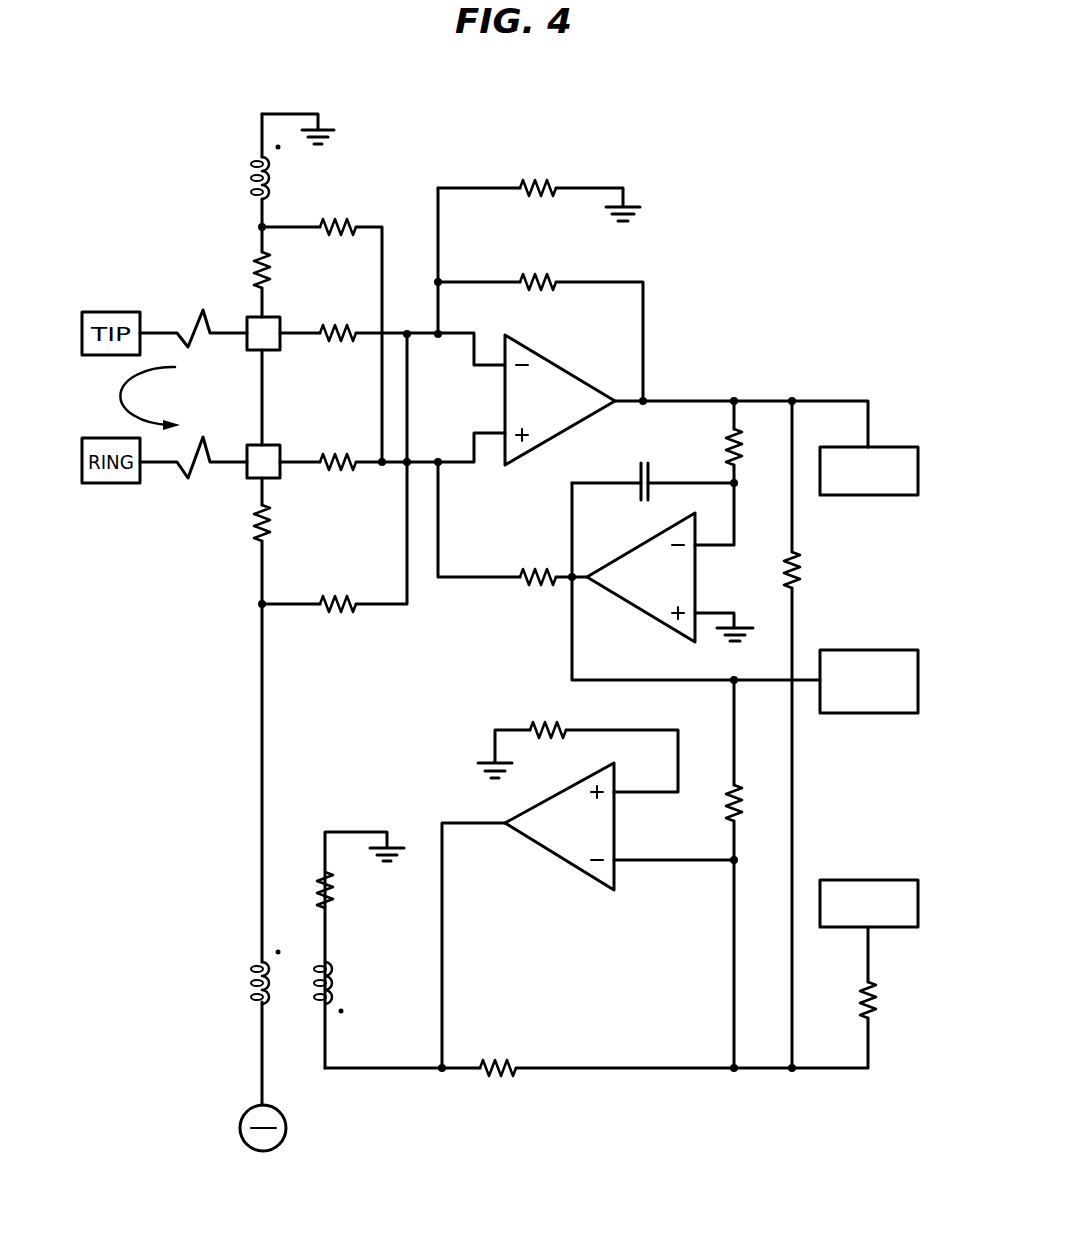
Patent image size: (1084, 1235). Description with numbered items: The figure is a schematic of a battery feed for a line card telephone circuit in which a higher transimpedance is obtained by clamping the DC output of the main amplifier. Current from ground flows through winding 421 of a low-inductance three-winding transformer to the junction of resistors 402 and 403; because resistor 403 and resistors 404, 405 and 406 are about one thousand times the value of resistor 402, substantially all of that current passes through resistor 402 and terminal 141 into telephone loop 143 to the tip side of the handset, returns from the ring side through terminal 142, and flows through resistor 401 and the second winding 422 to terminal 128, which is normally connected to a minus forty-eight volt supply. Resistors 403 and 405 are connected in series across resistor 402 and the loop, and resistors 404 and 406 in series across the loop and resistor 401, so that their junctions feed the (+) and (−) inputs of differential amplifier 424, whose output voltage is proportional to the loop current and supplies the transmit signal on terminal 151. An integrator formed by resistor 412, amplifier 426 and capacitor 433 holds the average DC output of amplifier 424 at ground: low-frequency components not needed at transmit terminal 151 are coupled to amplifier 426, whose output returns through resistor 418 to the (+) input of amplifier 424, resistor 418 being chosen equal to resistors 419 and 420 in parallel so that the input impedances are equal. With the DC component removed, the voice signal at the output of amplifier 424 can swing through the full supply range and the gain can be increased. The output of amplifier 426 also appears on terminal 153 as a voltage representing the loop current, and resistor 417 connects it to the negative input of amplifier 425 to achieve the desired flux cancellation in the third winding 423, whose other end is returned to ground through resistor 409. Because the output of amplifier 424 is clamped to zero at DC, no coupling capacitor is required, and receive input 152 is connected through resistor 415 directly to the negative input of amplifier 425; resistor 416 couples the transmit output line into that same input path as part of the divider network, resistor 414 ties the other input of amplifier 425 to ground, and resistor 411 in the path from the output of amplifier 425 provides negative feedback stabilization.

The terminal 128 is at (240, 1128).
The terminal 141 is at (275, 352).
The terminal 142 is at (268, 445).
The telephone loop 143 is at (125, 393).
The transmit terminal 151 is at (870, 496).
The receive terminal 152 is at (878, 880).
The terminal 153 is at (895, 650).
The resistor 401 is at (270, 525).
The resistor 402 is at (253, 270).
The resistor 403 is at (340, 218).
The resistor 404 is at (332, 326).
The resistor 405 is at (345, 470).
The resistor 406 is at (345, 612).
The resistor 409 is at (335, 890).
The resistor 411 is at (500, 1060).
The resistor 412 is at (727, 448).
The resistor 414 is at (548, 724).
The resistor 415 is at (878, 1000).
The resistor 416 is at (800, 571).
The resistor 417 is at (726, 803).
The resistor 418 is at (540, 572).
The resistor 419 is at (538, 182).
The resistor 420 is at (538, 276).
The winding 421 is at (252, 178).
The winding 422 is at (253, 982).
The winding 423 is at (342, 982).
The amplifier 424 is at (573, 362).
The amplifier 425 is at (555, 862).
The amplifier 426 is at (650, 620).
The capacitor 433 is at (641, 470).